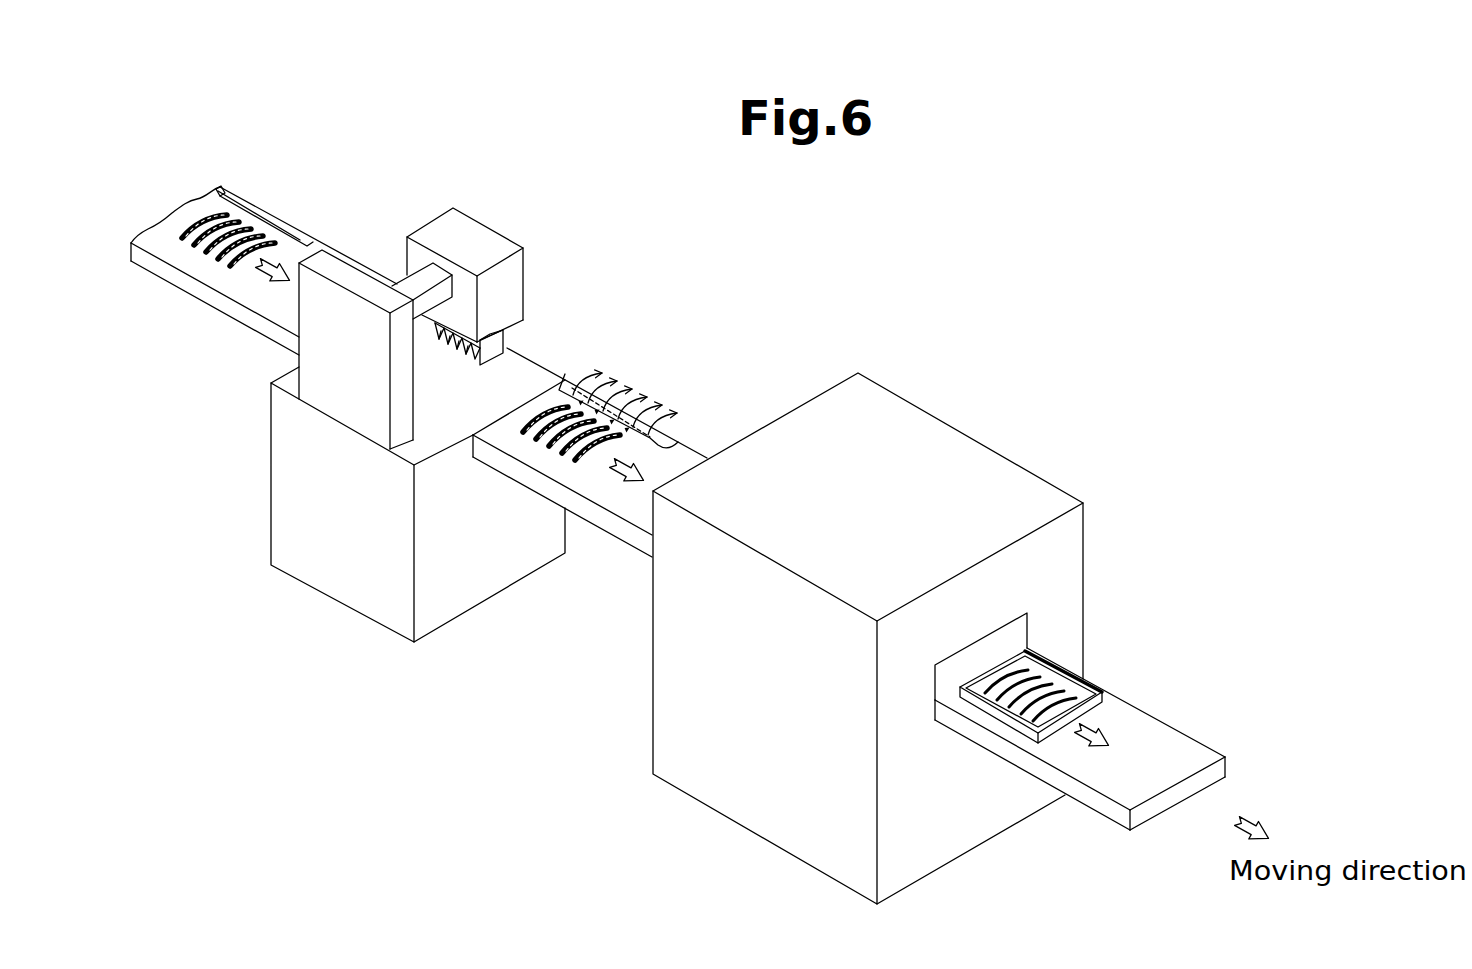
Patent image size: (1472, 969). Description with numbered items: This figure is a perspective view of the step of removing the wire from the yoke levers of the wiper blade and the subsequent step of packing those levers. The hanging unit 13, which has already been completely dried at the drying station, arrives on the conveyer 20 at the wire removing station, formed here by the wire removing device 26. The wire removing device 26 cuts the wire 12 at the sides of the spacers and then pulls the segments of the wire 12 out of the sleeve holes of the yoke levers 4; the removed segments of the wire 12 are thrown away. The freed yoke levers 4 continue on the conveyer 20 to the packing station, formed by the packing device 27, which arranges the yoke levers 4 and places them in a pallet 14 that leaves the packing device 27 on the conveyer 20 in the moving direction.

The yoke lever 4 is at (277, 242).
The wire 12 is at (223, 191).
The hanging unit 13 is at (342, 168).
The pallet 14 is at (1103, 700).
The conveyer 20 is at (250, 325).
The wire removing device 26 is at (338, 588).
The packing device 27 is at (800, 848).